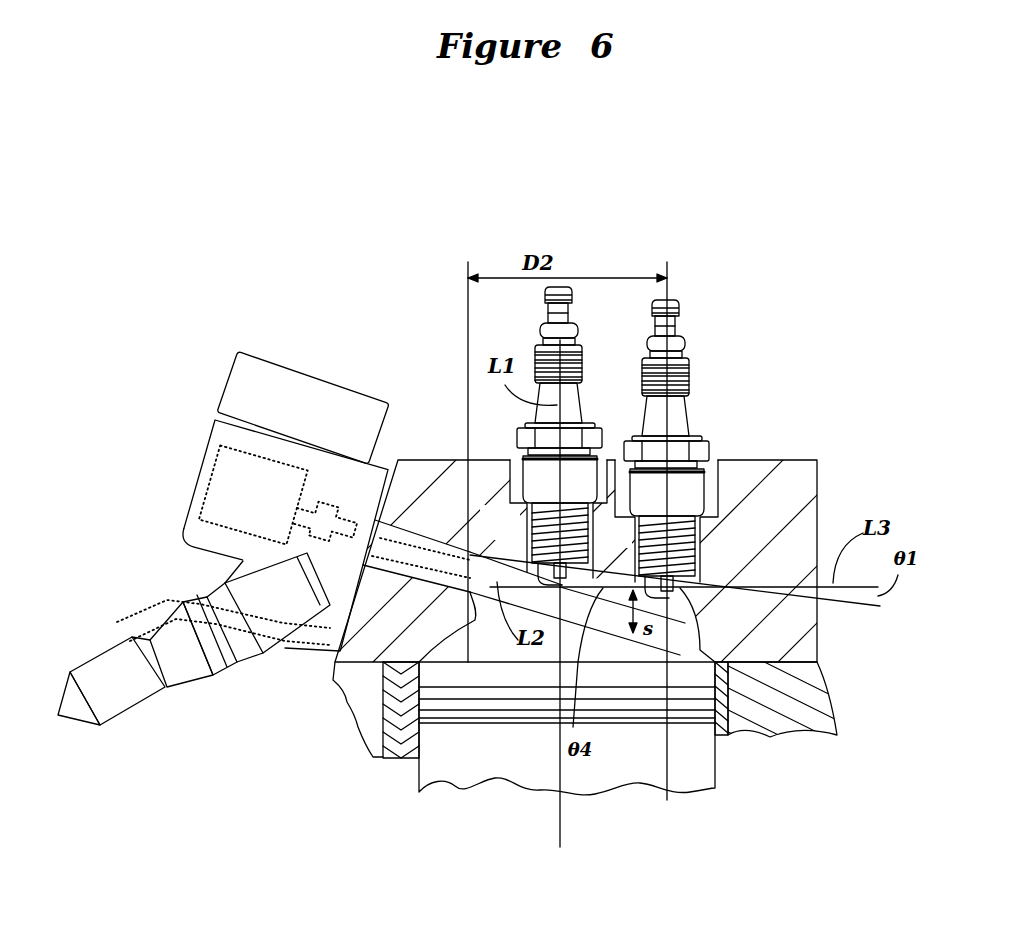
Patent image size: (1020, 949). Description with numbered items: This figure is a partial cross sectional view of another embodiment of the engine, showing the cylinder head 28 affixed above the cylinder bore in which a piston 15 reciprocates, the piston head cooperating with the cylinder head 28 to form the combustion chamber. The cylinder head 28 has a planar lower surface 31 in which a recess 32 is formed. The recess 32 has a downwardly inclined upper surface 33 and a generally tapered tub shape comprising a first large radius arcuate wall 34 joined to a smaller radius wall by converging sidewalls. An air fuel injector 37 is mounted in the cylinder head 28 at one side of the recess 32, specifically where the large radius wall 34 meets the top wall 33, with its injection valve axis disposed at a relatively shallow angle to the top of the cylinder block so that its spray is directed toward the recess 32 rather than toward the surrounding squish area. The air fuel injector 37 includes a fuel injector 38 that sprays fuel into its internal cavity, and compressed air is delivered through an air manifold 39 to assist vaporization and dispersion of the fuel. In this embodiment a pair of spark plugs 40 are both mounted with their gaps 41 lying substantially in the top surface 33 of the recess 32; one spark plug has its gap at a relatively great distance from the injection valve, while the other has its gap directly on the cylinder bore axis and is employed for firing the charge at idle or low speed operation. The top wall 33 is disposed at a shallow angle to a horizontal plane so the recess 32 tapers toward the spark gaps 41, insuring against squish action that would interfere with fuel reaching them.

The piston 15 is at (477, 773).
The cylinder head 28 is at (441, 456).
The planar lower surface 31 is at (395, 700).
The recess 32 is at (612, 658).
The upper surface 33 is at (598, 578).
The large radius arcuate wall 34 is at (480, 628).
The air fuel injector 37 is at (264, 540).
The fuel injector 38 is at (125, 695).
The air manifold 39 is at (270, 370).
The spark plugs 40 is at (684, 474).
The spark gaps 41 is at (535, 570).